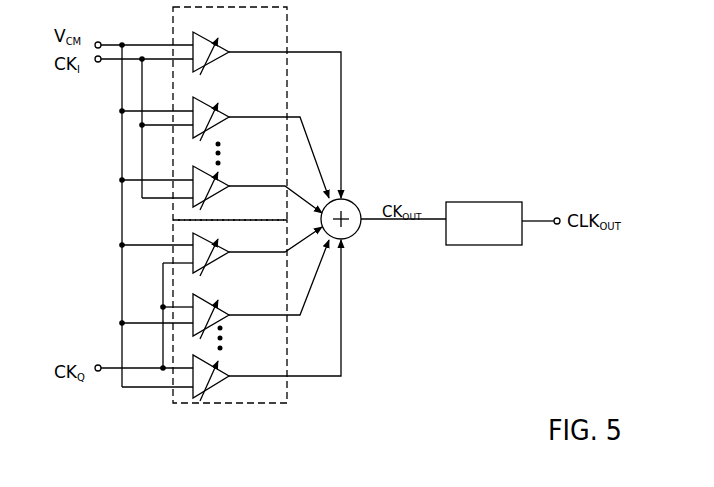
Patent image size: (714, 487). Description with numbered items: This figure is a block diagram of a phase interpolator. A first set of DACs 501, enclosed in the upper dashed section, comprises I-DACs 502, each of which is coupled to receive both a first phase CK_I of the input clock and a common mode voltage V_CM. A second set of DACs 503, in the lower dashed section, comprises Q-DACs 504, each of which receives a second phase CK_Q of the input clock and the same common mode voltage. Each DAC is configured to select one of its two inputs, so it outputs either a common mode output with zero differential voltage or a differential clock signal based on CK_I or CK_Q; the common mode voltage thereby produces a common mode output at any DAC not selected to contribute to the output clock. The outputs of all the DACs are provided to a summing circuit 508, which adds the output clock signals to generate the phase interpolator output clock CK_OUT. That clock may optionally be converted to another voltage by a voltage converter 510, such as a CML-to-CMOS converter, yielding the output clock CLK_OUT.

The first set of DACs 501 is at (290, 33).
The I-DAC 502 is at (227, 41).
The second set of DACs 503 is at (288, 348).
The Q-DAC 504 is at (233, 243).
The summing circuit 508 is at (357, 203).
The voltage converter 510 is at (508, 202).